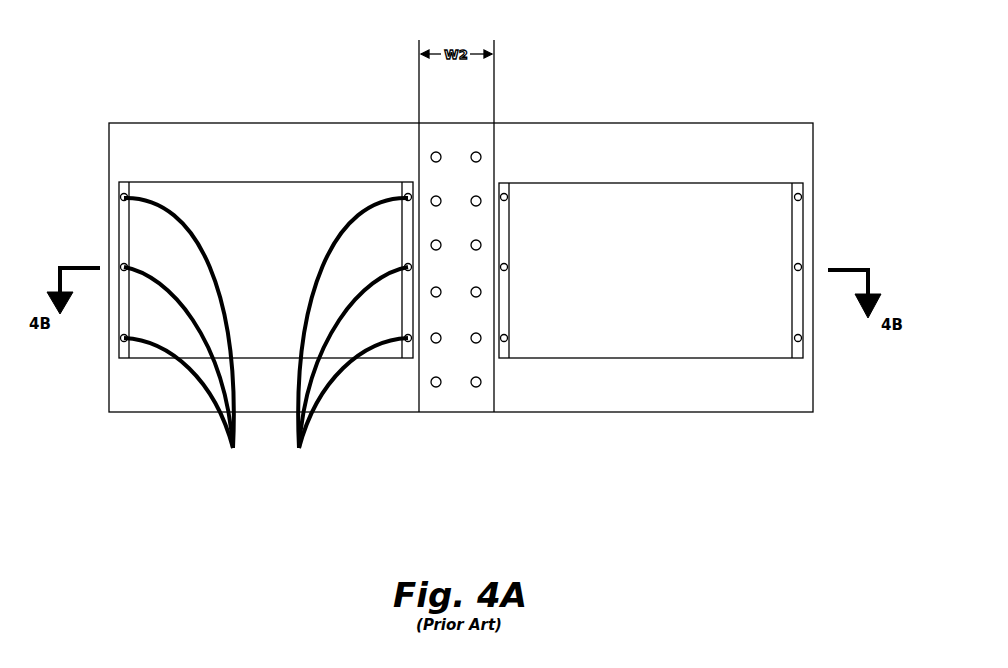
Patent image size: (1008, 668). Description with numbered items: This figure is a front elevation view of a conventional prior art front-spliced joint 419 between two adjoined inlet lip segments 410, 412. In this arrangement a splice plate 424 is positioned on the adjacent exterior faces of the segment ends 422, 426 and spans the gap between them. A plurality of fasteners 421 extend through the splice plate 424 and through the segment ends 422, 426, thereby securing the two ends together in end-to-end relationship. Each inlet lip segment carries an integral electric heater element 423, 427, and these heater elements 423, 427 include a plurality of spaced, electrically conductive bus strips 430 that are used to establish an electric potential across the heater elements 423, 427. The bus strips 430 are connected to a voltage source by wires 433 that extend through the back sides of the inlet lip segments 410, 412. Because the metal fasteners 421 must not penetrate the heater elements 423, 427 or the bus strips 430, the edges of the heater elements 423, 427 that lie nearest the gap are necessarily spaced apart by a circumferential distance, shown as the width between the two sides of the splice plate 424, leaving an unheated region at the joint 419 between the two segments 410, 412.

The inlet lip segment 410 is at (157, 403).
The inlet lip segment 412 is at (705, 122).
The spliced joint 419 is at (521, 84).
The fasteners 421 is at (481, 152).
The segment end 422 is at (508, 403).
The integral electric heater element 423 is at (624, 192).
The splice plate 424 is at (452, 138).
The segment end 426 is at (413, 408).
The integral electric heater element 427 is at (282, 193).
The bus strips 430 is at (125, 240).
The wires 433 is at (238, 434).